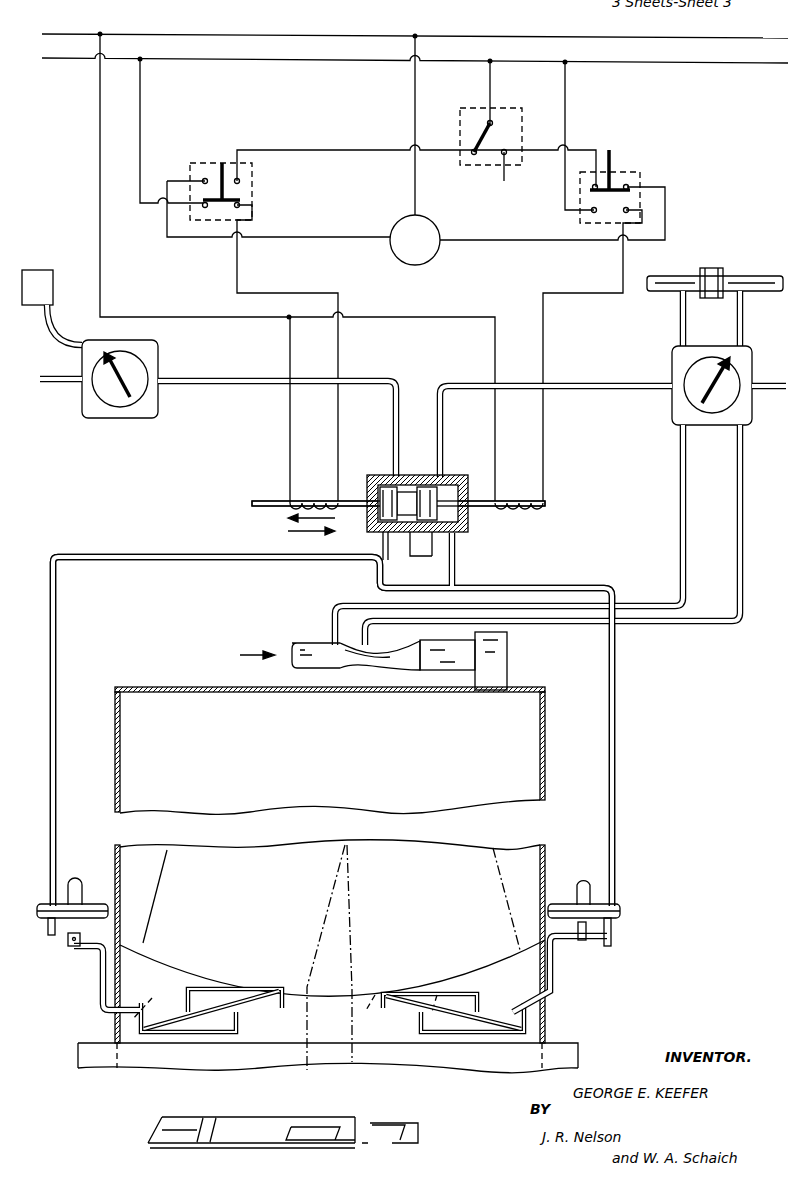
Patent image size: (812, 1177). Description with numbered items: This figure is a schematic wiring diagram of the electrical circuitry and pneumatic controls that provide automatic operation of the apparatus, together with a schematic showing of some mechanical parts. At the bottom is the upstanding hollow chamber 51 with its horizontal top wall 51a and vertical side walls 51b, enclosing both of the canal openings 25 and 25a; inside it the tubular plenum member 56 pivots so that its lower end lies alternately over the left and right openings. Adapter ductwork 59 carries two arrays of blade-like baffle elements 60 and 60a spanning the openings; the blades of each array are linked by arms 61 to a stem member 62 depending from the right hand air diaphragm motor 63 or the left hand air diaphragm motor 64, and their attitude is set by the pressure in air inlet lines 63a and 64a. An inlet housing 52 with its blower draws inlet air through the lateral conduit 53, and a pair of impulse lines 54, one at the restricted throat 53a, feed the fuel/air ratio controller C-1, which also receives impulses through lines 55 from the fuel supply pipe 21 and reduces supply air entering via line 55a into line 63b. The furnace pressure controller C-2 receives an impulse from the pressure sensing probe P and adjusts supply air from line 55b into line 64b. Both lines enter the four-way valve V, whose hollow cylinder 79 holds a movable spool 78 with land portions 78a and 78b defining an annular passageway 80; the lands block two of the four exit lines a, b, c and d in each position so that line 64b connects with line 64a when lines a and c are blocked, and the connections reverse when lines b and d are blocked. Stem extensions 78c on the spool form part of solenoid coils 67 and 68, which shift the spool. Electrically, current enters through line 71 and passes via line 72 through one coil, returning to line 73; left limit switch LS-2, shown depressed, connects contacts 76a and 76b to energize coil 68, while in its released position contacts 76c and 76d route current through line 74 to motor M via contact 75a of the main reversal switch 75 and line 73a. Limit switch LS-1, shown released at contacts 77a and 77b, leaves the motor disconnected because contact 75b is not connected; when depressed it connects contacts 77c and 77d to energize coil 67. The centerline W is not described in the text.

The line 71 is at (207, 38).
The line 73 is at (296, 58).
The line 72 is at (100, 115).
The line 74 is at (415, 96).
The line 73a is at (492, 92).
The main reversal switch 75 is at (480, 134).
The contact 75a is at (472, 155).
The contact 75b is at (517, 172).
The left limit switch LS-2 is at (231, 152).
The contact 76a is at (203, 208).
The contact 76b is at (240, 205).
The contact 76c is at (206, 178).
The contact 76d is at (240, 180).
The limit switch LS-1 is at (622, 165).
The contact 77a is at (593, 189).
The contact 77b is at (630, 186).
The contact 77c is at (593, 213).
The contact 77d is at (630, 210).
The motor M is at (415, 240).
The pressure sensing probe P is at (43, 270).
The fuel supply pipe 21 is at (752, 283).
The lines 55 is at (690, 325).
The line 55a is at (778, 383).
The line 55b is at (57, 384).
The impulse lines 54 is at (688, 490).
The fuel/air ratio controller C-1 is at (668, 412).
The furnace pressure controller C-2 is at (117, 422).
The line 64b is at (258, 350).
The line 63b is at (620, 360).
The spool 78 is at (408, 490).
The land portion 78a is at (386, 487).
The land portion 78b is at (436, 492).
The stem extensions 78c is at (255, 503).
The solenoid coil 68 is at (316, 500).
The solenoid coil 67 is at (522, 500).
The hollow cylinder 79 is at (470, 526).
The annular passageway 80 is at (380, 541).
The four-way valve V is at (398, 514).
The exit line a is at (378, 574).
The exit line b is at (412, 560).
The exit line c is at (434, 560).
The exit line d is at (458, 560).
The air inlet line 64a is at (208, 538).
The air inlet line 63a is at (598, 572).
The lateral conduit 53 is at (425, 655).
The restricted throat 53a is at (365, 662).
The inlet housing 52 is at (508, 645).
The hollow chamber 51 is at (362, 849).
The top wall 51a is at (203, 687).
The side walls 51b is at (115, 766).
The plenum member 56 is at (160, 867).
The adapter ductwork 59 is at (548, 1035).
The array of baffle elements 60 is at (498, 1012).
The array of baffle elements 60a is at (183, 1010).
The arms 61 is at (220, 1030).
The stem member 62 is at (68, 942).
The air diaphragm motor 63 is at (622, 911).
The air diaphragm motor 64 is at (50, 935).
The opening 25 is at (455, 1060).
The opening 25a is at (210, 1060).
The center line W is at (328, 1062).